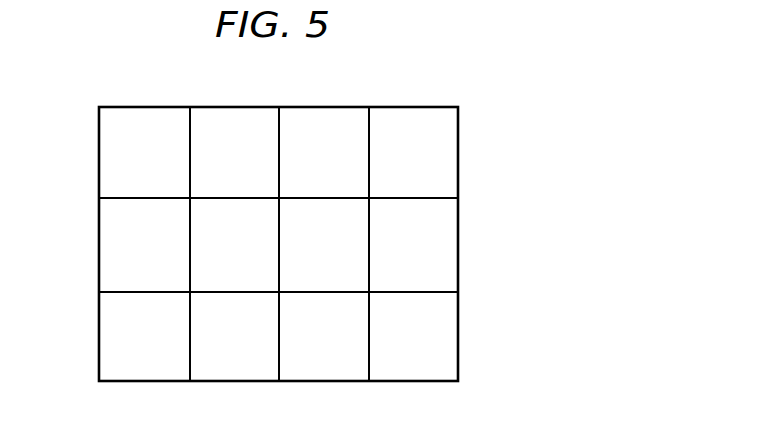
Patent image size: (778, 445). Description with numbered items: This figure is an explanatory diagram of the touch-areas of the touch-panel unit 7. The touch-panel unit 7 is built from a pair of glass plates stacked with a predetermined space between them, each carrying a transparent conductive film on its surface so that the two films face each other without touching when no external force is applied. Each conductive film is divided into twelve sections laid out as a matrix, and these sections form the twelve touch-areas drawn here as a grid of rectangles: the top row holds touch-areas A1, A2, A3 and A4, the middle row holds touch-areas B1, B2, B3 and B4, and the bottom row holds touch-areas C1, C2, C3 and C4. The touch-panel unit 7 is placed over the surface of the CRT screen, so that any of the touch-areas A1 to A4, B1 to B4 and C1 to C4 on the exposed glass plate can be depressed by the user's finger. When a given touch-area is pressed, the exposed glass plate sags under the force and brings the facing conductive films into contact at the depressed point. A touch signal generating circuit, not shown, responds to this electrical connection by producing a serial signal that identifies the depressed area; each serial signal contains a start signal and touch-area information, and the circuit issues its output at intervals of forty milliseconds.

The touch-panel unit 7 is at (499, 113).
The touch-area A1 is at (156, 123).
The touch-area A2 is at (250, 122).
The touch-area A3 is at (340, 123).
The touch-area A4 is at (421, 120).
The touch-area B1 is at (109, 228).
The touch-area B2 is at (216, 279).
The touch-area B3 is at (353, 231).
The touch-area B4 is at (430, 274).
The touch-area C1 is at (163, 371).
The touch-area C2 is at (249, 371).
The touch-area C3 is at (338, 370).
The touch-area C4 is at (432, 370).